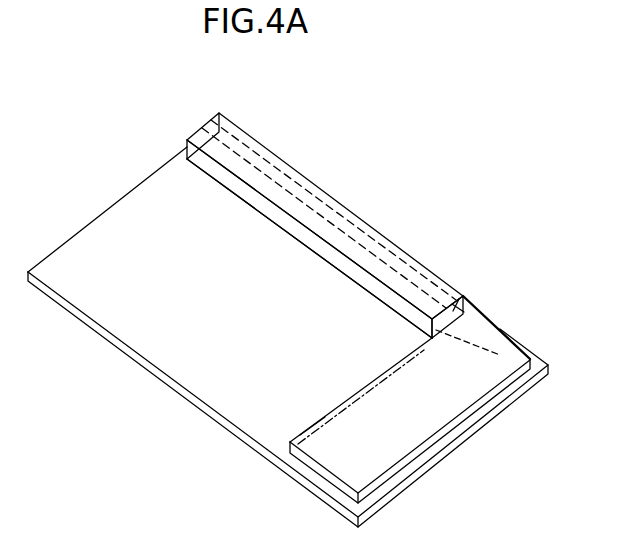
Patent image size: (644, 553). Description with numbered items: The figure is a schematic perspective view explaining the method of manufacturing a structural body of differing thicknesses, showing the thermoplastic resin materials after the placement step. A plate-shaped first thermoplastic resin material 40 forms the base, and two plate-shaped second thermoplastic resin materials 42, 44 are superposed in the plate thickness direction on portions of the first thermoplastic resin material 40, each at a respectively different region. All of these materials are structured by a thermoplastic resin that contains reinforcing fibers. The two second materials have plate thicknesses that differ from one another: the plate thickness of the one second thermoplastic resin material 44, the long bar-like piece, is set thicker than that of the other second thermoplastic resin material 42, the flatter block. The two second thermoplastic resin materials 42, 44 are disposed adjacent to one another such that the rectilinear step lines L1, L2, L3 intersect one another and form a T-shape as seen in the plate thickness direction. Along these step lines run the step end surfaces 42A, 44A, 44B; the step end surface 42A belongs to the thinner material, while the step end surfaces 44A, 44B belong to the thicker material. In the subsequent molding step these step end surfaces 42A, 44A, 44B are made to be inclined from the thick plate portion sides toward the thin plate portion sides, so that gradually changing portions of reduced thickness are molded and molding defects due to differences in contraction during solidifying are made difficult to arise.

The first thermoplastic resin material 40 is at (123, 212).
The second thermoplastic resin material 42 is at (503, 354).
The step end surface 42A is at (325, 405).
The second thermoplastic resin material 44 is at (355, 242).
The step end surface 44A is at (466, 303).
The step end surface 44B is at (300, 233).
The step line L1 is at (351, 377).
The step line L2 is at (439, 301).
The step line L3 is at (250, 172).